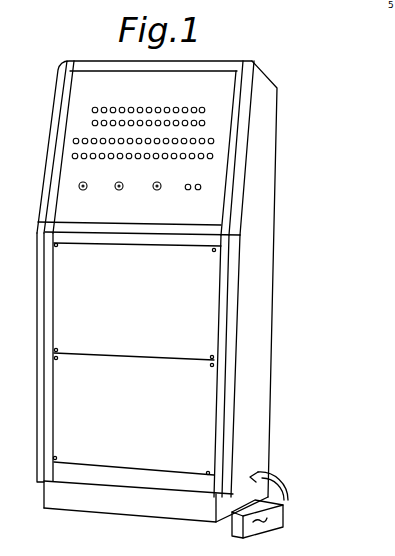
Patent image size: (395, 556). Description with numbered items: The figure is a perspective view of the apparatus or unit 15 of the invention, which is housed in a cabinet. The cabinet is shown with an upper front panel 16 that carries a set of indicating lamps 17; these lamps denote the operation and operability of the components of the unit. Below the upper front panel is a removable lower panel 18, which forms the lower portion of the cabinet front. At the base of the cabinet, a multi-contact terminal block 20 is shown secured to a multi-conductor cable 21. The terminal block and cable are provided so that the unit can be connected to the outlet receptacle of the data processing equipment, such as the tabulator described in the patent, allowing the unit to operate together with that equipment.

The unit 15 is at (165, 303).
The upper front panel 16 is at (189, 279).
The indicating lamps 17 is at (207, 107).
The removable lower panel 18 is at (185, 418).
The multi-contact terminal block 20 is at (252, 533).
The multi-conductor cable 21 is at (282, 472).